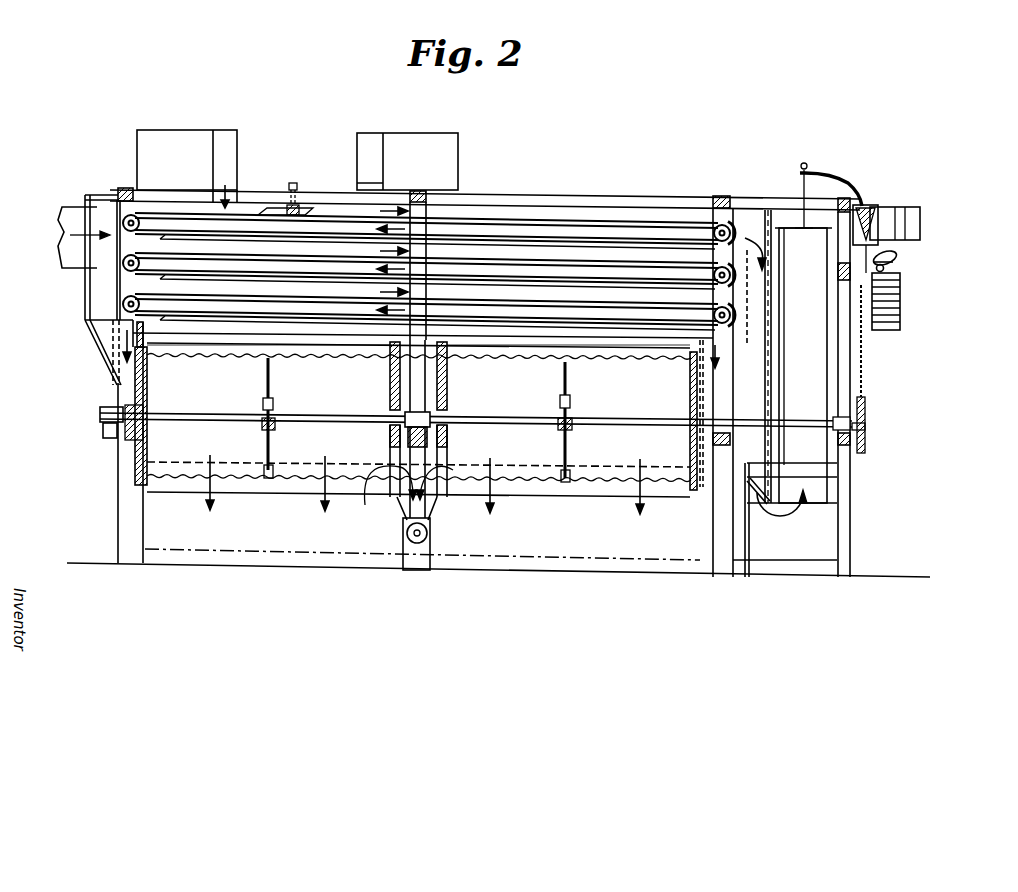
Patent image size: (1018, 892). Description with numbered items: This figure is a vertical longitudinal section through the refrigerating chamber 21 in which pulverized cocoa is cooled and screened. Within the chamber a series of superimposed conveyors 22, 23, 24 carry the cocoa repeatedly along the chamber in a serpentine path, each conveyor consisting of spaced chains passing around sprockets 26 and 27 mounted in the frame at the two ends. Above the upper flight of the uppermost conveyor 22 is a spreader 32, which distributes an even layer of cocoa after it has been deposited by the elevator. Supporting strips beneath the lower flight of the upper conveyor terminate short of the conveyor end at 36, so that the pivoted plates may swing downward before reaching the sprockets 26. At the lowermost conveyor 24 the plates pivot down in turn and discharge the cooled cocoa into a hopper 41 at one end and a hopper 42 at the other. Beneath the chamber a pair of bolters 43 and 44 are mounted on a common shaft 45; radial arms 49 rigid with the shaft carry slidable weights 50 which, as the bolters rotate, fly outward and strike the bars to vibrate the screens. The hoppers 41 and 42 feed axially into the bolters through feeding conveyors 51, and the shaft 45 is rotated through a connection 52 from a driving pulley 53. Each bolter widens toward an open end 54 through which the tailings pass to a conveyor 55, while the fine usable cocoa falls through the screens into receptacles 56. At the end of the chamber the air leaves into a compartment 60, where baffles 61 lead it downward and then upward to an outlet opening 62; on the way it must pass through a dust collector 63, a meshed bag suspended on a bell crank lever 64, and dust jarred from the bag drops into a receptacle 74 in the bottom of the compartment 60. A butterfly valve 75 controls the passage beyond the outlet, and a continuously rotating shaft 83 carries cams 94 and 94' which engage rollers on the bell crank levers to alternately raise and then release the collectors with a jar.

The refrigerating chamber 21 is at (577, 204).
The uppermost conveyor 22 is at (157, 215).
The conveyor 23 is at (161, 277).
The conveyor 24 is at (161, 318).
The sprockets 26 is at (118, 222).
The sprockets 27 is at (697, 228).
The spreader 32 is at (267, 208).
The termination point of supporting strips 36 is at (161, 237).
The hopper 41 is at (740, 347).
The hopper 42 is at (98, 362).
The bolter 43 is at (268, 373).
The bolter 44 is at (568, 375).
The common shaft 45 is at (198, 414).
The radial arms 49 is at (272, 369).
The weights 50 is at (264, 468).
The feeding conveyors 51 is at (130, 433).
The connection 52 is at (866, 377).
The driving pulley 53 is at (901, 314).
The open end 54 is at (403, 435).
The conveyor 55 is at (430, 533).
The receptacles 56 is at (297, 537).
The compartment 60 is at (822, 493).
The baffles 61 is at (767, 475).
The outlet opening 62 is at (853, 210).
The dust collector 63 is at (812, 364).
The bell crank lever 64 is at (827, 178).
The receptacle 74 is at (817, 547).
The butterfly valve 75 is at (920, 209).
The shaft 83 is at (884, 269).
The cam 94 is at (912, 267).
The cam 94' is at (925, 252).